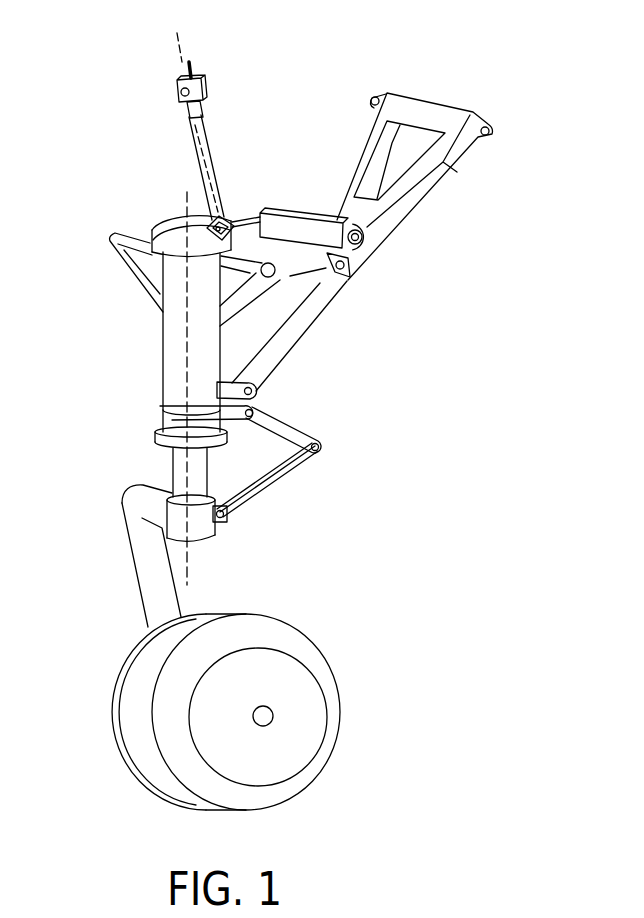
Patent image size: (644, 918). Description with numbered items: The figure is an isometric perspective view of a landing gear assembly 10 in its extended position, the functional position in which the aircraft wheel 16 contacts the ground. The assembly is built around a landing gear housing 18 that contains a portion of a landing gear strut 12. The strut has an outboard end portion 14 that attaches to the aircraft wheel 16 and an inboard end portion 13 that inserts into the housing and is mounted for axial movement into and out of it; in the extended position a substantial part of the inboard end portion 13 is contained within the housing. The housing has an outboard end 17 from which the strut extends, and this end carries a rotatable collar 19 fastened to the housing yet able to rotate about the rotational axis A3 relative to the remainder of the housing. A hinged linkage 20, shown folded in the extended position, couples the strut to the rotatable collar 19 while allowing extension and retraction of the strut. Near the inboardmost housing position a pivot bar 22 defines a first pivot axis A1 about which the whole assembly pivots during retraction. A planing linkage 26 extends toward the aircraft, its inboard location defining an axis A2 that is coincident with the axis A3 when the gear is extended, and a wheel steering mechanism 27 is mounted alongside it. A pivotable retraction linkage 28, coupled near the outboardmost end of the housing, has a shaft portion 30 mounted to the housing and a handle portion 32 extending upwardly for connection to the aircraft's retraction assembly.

The landing gear assembly 10 is at (417, 343).
The landing gear strut 12 is at (123, 512).
The inboard end portion 13 is at (173, 467).
The outboard end portion 14 is at (152, 617).
The aircraft wheel 16 is at (333, 680).
The outboard end 17 is at (155, 437).
The landing gear housing 18 is at (162, 326).
The rotatable collar 19 is at (163, 413).
The hinged linkage 20 is at (300, 468).
The pivot bar 22 is at (115, 250).
The planing linkage 26 is at (193, 138).
The wheel steering mechanism 27 is at (290, 212).
The pivotable retraction linkage 28 is at (338, 288).
The shaft portion 30 is at (292, 347).
The handle portion 32 is at (422, 203).
The first pivot axis A1 is at (72, 233).
The planing linkage axis A2 is at (183, 55).
The rotational axis A3 is at (188, 550).